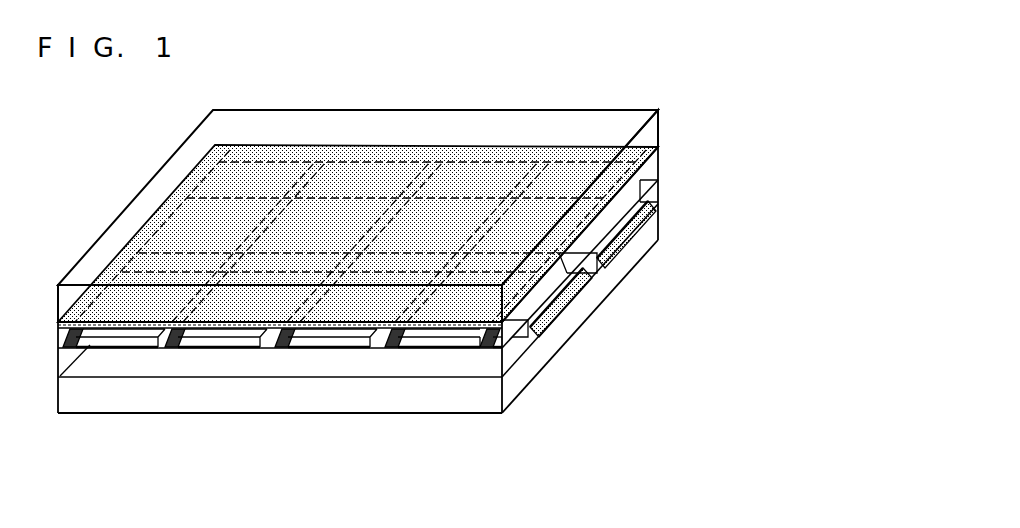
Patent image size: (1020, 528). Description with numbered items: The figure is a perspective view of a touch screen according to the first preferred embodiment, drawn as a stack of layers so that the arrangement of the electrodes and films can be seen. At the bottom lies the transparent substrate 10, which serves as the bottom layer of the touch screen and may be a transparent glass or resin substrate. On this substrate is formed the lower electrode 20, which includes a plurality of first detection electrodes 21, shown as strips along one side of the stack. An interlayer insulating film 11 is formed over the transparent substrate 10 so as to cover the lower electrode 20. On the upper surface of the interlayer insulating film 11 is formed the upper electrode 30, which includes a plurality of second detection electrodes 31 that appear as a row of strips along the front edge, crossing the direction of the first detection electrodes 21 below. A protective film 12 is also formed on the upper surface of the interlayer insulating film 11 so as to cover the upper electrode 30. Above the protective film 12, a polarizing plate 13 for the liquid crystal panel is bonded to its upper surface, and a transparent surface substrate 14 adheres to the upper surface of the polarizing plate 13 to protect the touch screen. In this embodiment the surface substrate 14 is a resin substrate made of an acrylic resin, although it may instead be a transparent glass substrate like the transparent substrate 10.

The transparent substrate 10 is at (78, 387).
The interlayer insulating film 11 is at (517, 345).
The protective film 12 is at (492, 345).
The polarizing plate 13 is at (648, 172).
The surface substrate 14 is at (655, 135).
The lower electrode 20 is at (584, 295).
The first detection electrode 21 is at (626, 243).
The upper electrode 30 is at (271, 416).
The second detection electrode 31 is at (431, 350).